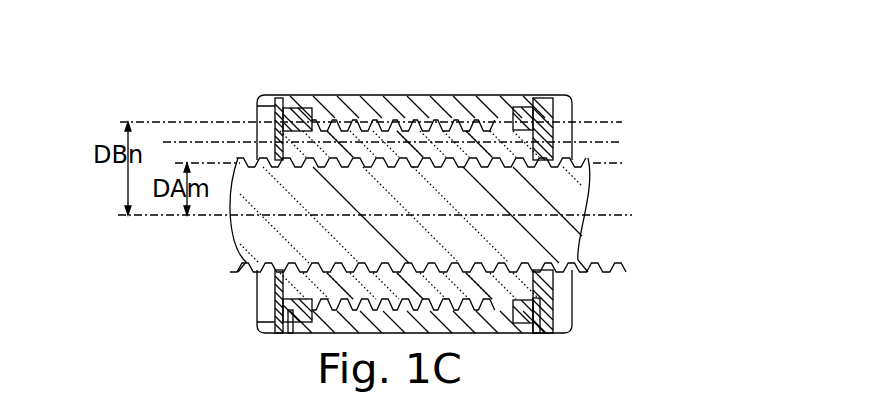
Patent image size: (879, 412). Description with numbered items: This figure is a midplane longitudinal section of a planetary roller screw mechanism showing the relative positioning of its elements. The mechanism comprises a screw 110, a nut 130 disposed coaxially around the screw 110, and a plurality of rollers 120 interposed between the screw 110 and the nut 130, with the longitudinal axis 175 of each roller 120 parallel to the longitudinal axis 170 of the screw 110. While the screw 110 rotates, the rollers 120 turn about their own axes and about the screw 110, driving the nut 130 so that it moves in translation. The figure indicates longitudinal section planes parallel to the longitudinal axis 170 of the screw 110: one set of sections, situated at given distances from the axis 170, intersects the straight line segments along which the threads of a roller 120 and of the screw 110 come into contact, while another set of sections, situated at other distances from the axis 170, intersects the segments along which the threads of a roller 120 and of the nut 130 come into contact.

The screw 110 is at (488, 128).
The rollers 120 is at (443, 123).
The nut 130 is at (347, 120).
The longitudinal axis of the screw 170 is at (615, 217).
The longitudinal axis of the roller 175 is at (616, 142).